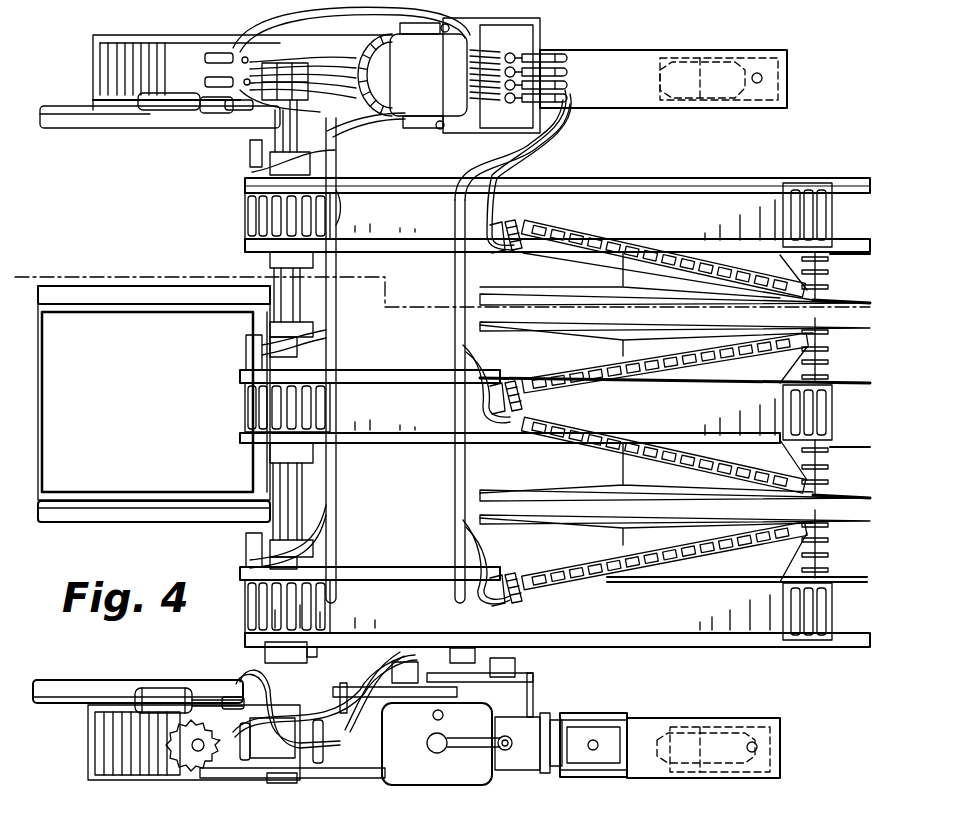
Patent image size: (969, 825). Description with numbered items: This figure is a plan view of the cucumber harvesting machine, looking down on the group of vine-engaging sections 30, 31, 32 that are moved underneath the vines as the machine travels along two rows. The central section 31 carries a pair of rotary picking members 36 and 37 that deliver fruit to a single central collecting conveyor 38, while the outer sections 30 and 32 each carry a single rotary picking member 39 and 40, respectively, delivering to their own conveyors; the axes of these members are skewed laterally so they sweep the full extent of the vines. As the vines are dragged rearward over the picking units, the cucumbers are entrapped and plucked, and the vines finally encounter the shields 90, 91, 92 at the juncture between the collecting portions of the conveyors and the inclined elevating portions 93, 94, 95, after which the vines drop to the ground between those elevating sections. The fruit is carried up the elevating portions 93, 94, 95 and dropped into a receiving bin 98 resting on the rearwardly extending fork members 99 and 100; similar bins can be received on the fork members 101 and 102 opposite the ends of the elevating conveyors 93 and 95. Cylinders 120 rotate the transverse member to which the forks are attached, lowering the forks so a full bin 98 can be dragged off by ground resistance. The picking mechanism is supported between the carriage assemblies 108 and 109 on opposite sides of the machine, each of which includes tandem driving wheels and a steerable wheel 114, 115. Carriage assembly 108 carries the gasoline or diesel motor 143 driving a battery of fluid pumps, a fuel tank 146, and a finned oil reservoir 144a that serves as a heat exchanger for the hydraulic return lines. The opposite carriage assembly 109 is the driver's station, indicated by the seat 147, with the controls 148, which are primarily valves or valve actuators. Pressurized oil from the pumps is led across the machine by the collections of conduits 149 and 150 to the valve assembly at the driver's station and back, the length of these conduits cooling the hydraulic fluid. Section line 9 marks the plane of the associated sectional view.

The section line 9- 9 is at (27, 305).
The vine-engaging section 30 is at (830, 602).
The central section 31 is at (832, 418).
The vine-engaging section 32 is at (835, 223).
The rotary picking member 36 is at (613, 441).
The rotary picking member 37 is at (576, 393).
The central collecting conveyor 38 is at (702, 425).
The rotary picking member 39 is at (555, 590).
The rotary picking member 40 is at (575, 242).
The shield 90 is at (517, 572).
The shield 91 is at (522, 381).
The shield 92 is at (522, 250).
The elevating conveyor section 93 is at (240, 598).
The elevating conveyor section 94 is at (242, 397).
The elevating conveyor section 95 is at (242, 205).
The receiving bin 98 is at (143, 402).
The fork member 99 is at (83, 290).
The fork member 100 is at (80, 515).
The fork member 101 is at (84, 130).
The fork member 102 is at (72, 687).
The carriage assembly 108 is at (735, 782).
The carriage assembly 109 is at (623, 50).
The steerable wheel 114 is at (685, 58).
The steerable wheel 115 is at (670, 737).
The cylinder 120 is at (160, 700).
The motor 143 is at (480, 783).
The finned oil reservoir 144a is at (200, 768).
The fuel tank 146 is at (590, 778).
The seat 147 is at (447, 85).
The controls 148 is at (545, 57).
The collection of conduits 149 is at (336, 347).
The collection of conduits 150 is at (453, 405).